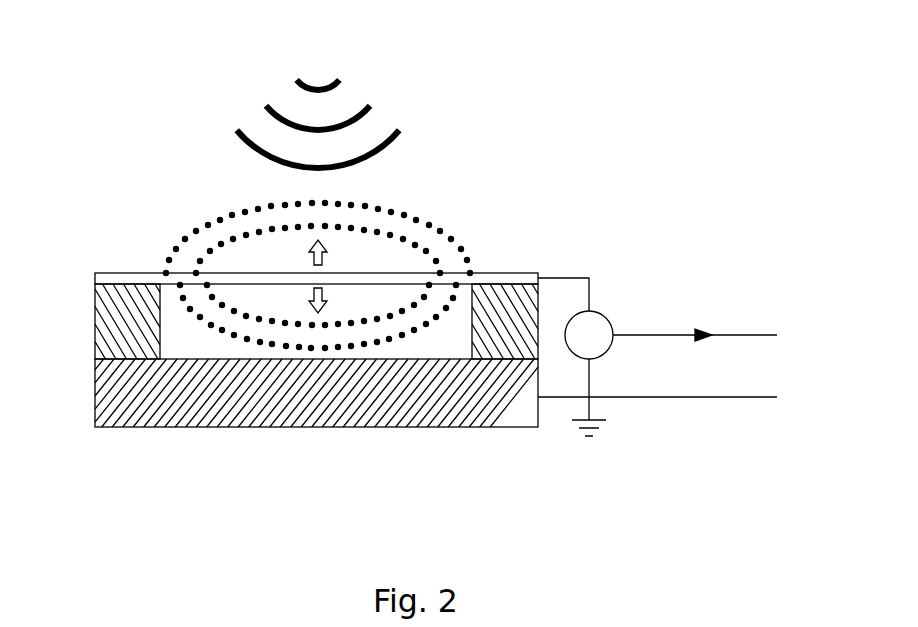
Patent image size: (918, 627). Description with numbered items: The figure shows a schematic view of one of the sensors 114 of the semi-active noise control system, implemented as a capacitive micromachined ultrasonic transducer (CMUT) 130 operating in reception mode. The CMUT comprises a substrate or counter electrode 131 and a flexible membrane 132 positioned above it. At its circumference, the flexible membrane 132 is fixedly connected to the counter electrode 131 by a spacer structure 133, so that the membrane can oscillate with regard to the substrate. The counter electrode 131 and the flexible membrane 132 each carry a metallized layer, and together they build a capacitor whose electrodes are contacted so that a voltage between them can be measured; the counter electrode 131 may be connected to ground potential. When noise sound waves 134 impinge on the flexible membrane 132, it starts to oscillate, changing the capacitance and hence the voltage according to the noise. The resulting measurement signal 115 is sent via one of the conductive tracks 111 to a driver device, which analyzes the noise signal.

The sensor 114 is at (377, 279).
The capacitive micromachined ultrasonic transducer (CMUT) 130 is at (377, 279).
The substrate, counter electrode 131 is at (118, 427).
The flexible membrane 132 is at (113, 272).
The spacer structure 133 is at (98, 323).
The noise sound waves 134 is at (358, 73).
The measurement signal 115 is at (645, 330).
The conductive tracks 111 is at (748, 319).